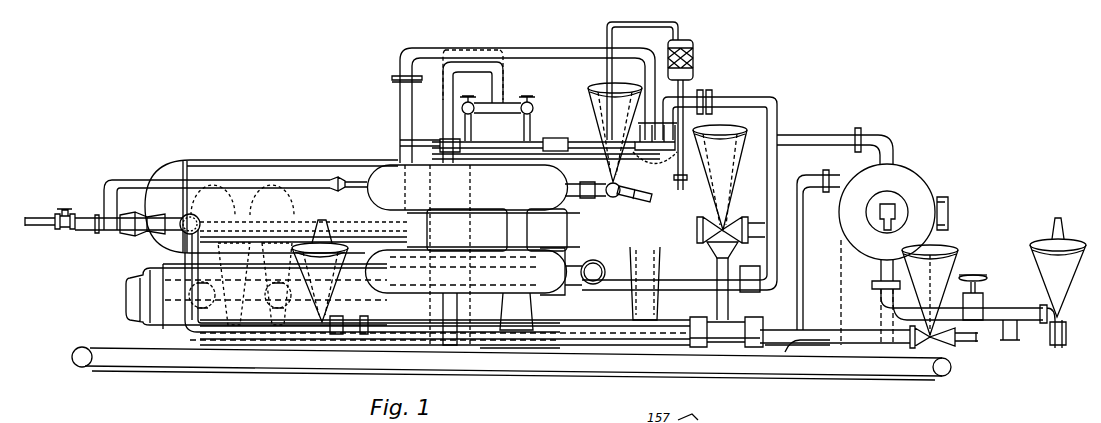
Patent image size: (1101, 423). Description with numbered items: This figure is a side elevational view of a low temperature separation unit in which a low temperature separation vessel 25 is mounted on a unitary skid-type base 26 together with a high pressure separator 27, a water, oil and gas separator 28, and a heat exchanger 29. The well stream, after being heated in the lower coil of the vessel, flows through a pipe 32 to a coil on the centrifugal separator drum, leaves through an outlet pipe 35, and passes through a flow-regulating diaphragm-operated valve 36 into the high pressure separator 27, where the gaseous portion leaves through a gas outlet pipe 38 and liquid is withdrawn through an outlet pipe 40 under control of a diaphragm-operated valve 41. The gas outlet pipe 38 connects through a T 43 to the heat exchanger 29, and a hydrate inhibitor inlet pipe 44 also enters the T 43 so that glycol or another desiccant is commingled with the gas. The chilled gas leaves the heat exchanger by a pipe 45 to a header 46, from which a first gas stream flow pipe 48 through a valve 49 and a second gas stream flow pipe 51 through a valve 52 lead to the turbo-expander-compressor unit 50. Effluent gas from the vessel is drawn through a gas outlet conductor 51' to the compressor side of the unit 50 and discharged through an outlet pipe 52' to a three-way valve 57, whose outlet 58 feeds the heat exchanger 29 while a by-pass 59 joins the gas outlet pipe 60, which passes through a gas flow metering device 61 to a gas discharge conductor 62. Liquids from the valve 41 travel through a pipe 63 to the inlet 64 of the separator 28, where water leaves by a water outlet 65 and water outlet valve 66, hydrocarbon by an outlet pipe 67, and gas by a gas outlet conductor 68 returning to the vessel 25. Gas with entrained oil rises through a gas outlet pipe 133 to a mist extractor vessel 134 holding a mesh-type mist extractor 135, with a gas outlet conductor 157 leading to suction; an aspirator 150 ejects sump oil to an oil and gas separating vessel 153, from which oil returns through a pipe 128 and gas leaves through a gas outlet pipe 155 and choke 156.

The low temperature separation vessel 25 is at (315, 145).
The unitary skid-type base 26 is at (205, 366).
The high pressure separator 27 is at (375, 170).
The water, oil and gas separator 28 is at (905, 182).
The heat exchanger 29 is at (132, 295).
The pipe 32 is at (755, 195).
The outlet pipe 35 is at (628, 200).
The flow-regulating diaphragm-operated valve 36 is at (590, 86).
The gas outlet pipe 38 is at (248, 175).
The outlet pipe 40 is at (370, 323).
The diaphragm-operated valve 41 is at (325, 292).
The T 43 is at (107, 228).
The hydrate inhibitor inlet pipe 44 is at (43, 230).
The pipe 45 is at (445, 114).
The header 46 is at (500, 118).
The first gas stream flow pipe 48 is at (532, 118).
The valve 49 is at (530, 100).
The turbo-expander-compressor unit 50 is at (640, 135).
The second gas stream flow pipe 51 is at (536, 140).
The gas outlet conductor 51' is at (523, 90).
The valve 52 is at (470, 90).
The outlet pipe 52' is at (687, 184).
The three-way valve 57 is at (726, 125).
The outlet 58 is at (722, 310).
The by-pass 59 is at (360, 216).
The gas outlet pipe 60 is at (180, 305).
The gas flow metering device 61 is at (718, 362).
The gas discharge conductor 62 is at (845, 330).
The pipe 63 is at (775, 355).
The inlet 64 is at (839, 178).
The water outlet 65 is at (986, 312).
The water outlet valve 66 is at (1050, 330).
The outlet pipe 67 is at (824, 355).
The gas outlet conductor 68 is at (822, 135).
The pipe 128 is at (495, 350).
The gas outlet pipe 133 is at (685, 85).
The mist extractor vessel 134 is at (693, 42).
The mesh-type mist extractor 135 is at (694, 58).
The aspirator 150 is at (685, 204).
The oil and gas separating vessel 153 is at (438, 196).
The gas outlet pipe 155 is at (400, 143).
The choke 156 is at (570, 138).
The gas outlet conductor 157 is at (660, 16).